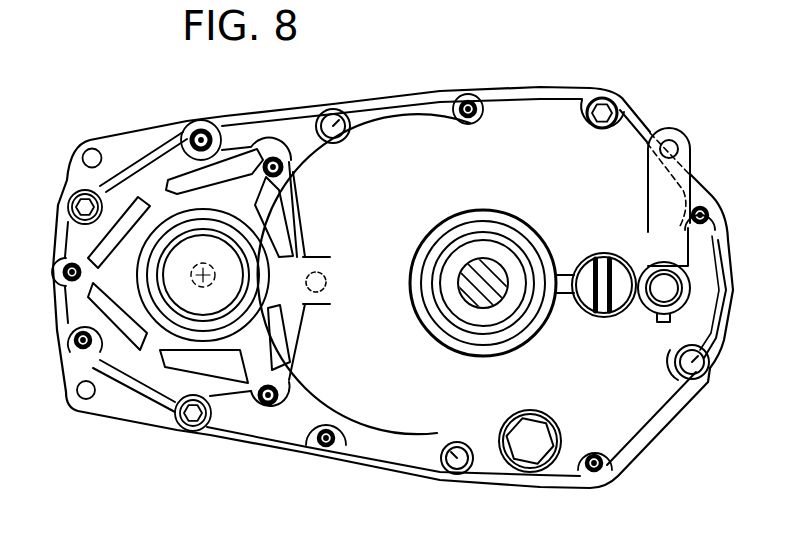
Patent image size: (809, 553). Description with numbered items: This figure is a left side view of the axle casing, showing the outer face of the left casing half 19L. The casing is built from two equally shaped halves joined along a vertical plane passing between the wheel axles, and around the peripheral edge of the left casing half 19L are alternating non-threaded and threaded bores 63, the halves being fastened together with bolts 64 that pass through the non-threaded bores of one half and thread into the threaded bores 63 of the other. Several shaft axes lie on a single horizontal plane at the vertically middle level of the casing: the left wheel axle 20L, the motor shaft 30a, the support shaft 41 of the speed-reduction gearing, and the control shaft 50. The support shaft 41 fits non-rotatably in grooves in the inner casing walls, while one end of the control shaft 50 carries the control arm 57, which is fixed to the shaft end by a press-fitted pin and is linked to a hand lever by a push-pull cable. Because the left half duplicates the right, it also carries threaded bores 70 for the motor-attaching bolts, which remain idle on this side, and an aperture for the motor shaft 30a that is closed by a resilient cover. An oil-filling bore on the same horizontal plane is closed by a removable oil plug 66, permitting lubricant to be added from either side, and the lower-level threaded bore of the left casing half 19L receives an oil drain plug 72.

The left casing half 19L is at (546, 105).
The motor shaft 30a is at (203, 262).
The threaded bores 70 is at (63, 268).
The bolts 64 is at (347, 108).
The threaded bores 63 is at (473, 97).
The control arm 57 is at (683, 137).
The left wheel axle 20L is at (508, 278).
The oil plug 66 is at (588, 298).
The control shaft 50 is at (668, 294).
The oil drain plug 72 is at (530, 440).
The support shaft 41 is at (326, 293).